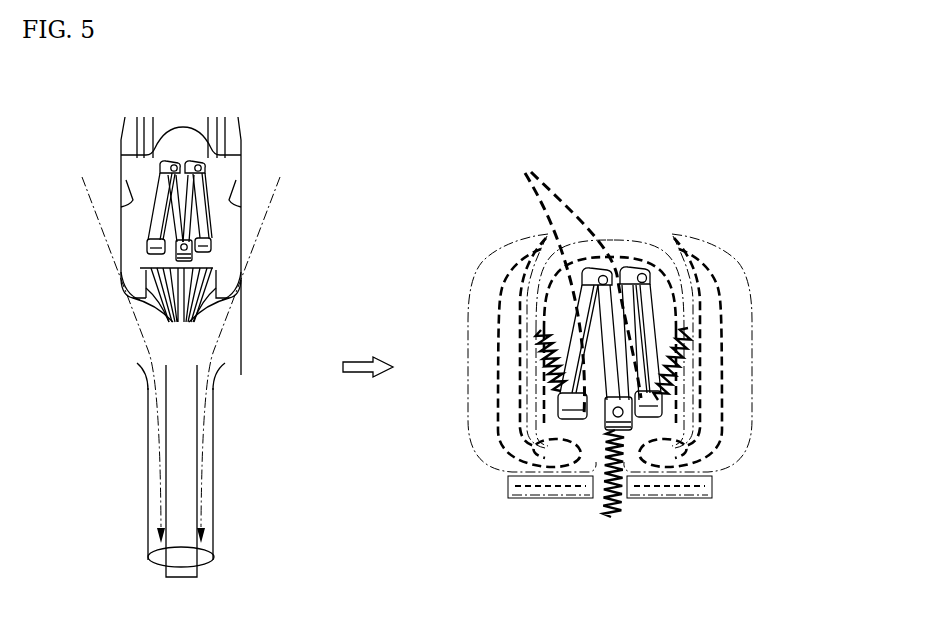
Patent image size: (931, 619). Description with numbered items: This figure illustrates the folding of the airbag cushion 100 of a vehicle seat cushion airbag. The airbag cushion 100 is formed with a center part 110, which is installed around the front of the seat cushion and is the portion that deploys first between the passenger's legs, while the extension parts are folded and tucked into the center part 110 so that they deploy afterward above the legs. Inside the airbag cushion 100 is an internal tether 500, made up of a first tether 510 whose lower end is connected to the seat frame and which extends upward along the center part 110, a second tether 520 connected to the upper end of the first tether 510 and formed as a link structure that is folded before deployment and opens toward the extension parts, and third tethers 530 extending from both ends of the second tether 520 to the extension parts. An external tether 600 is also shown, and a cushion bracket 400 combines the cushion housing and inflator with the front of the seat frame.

The airbag cushion 100 is at (243, 165).
The center part 110 is at (212, 471).
The cushion bracket 400 is at (714, 487).
The internal tether 500 is at (153, 182).
The first tether 510 is at (612, 517).
The second tether 520 is at (648, 307).
The third tether 530 is at (543, 330).
The external tether 600 is at (555, 181).